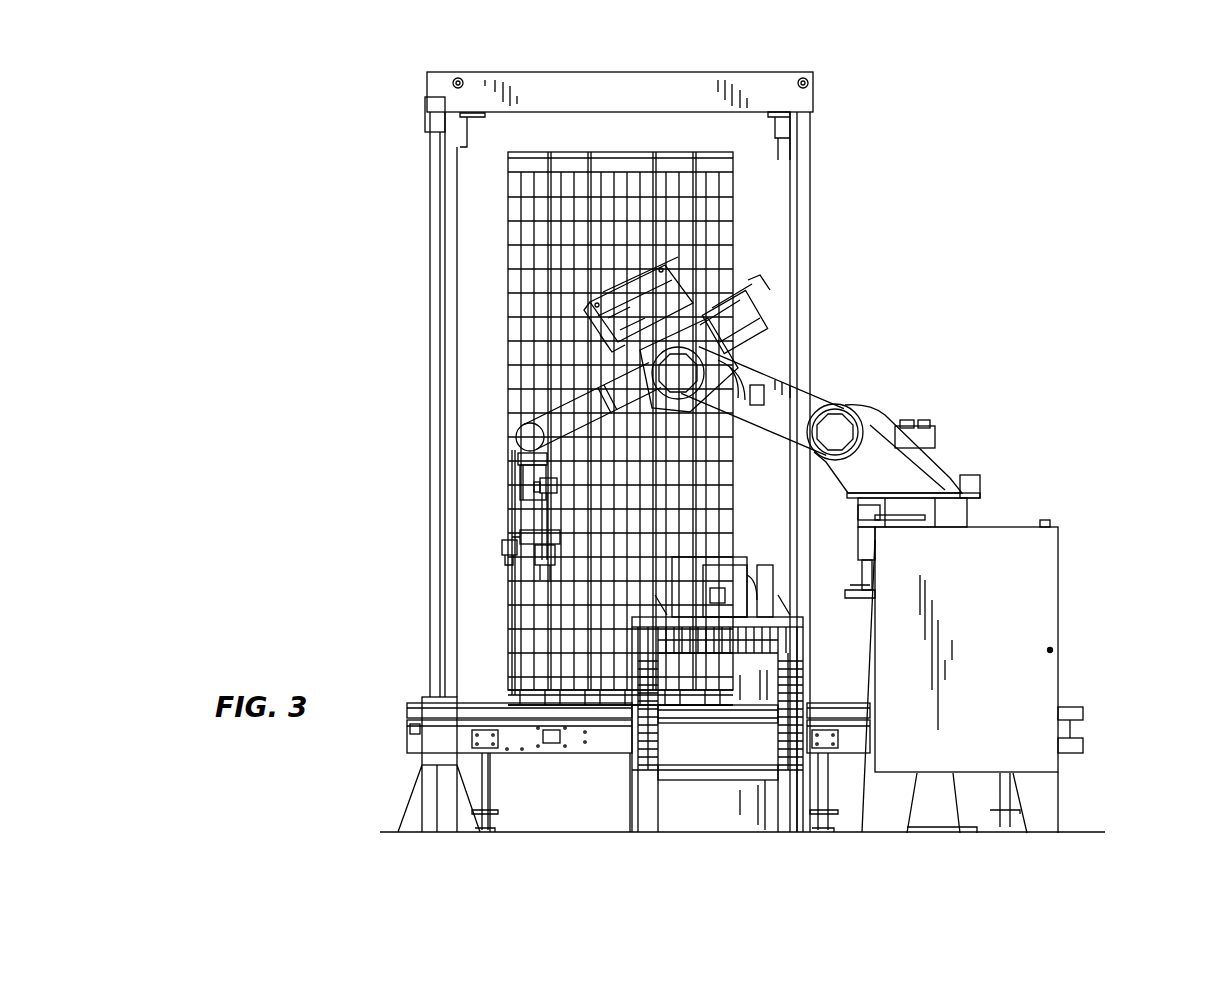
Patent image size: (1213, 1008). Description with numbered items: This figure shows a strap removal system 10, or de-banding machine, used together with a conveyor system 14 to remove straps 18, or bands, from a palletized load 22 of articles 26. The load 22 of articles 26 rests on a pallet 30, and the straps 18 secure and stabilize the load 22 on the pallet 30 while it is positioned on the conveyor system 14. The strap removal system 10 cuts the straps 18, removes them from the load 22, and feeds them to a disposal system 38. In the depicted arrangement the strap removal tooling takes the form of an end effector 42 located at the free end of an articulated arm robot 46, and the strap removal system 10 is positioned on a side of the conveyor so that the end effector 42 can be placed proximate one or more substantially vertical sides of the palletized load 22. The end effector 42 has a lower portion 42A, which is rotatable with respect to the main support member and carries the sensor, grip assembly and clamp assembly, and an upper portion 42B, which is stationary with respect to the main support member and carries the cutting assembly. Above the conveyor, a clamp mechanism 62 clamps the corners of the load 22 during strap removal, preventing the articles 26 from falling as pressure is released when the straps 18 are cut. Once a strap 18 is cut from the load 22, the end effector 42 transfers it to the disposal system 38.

The strap removal system 10 is at (968, 186).
The conveyor system 14 is at (548, 770).
The straps 18 is at (693, 160).
The palletized load 22 is at (508, 208).
The articles 26 is at (512, 300).
The pallet 30 is at (512, 695).
The disposal system 38 is at (733, 598).
The end effector 42 is at (350, 460).
The lower portion 42A is at (485, 556).
The upper portion 42B is at (500, 488).
The articulated arm robot 46 is at (800, 398).
The clamp mechanism 62 is at (686, 87).